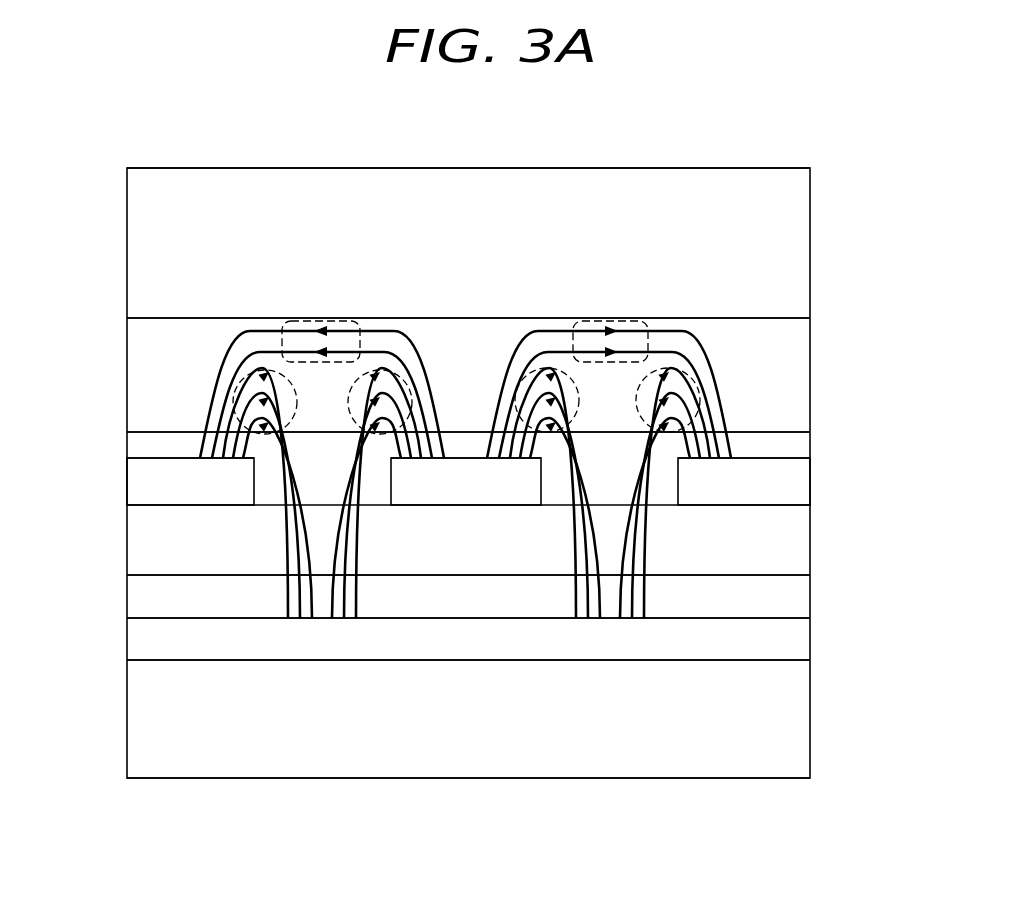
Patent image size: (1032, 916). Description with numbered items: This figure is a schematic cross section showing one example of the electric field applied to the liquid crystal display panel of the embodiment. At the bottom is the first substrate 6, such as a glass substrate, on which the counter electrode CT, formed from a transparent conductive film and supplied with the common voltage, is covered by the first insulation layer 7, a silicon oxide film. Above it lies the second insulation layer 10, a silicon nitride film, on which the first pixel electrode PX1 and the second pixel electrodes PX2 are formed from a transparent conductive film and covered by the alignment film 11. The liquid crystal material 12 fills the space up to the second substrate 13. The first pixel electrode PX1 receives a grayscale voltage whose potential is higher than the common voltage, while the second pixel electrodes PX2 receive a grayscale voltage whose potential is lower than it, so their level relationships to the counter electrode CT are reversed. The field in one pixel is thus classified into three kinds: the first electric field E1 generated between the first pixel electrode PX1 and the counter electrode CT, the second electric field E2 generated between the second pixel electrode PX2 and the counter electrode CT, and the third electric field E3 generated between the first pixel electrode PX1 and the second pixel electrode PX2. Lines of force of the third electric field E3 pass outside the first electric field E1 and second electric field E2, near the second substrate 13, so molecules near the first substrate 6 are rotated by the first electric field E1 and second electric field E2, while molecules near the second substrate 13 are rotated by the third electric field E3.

The second substrate 13 is at (775, 181).
The liquid crystal material 12 is at (795, 378).
The alignment film 11 is at (795, 440).
The second insulation layer 10 is at (795, 545).
The first insulation layer 7 is at (790, 604).
The first substrate 6 is at (795, 726).
The counter electrode CT is at (150, 650).
The first pixel electrode PX1 is at (418, 493).
The second pixel electrode PX2 is at (236, 493).
The first electric field E1 is at (383, 356).
The second electric field E2 is at (266, 356).
The third electric field E3 is at (305, 312).